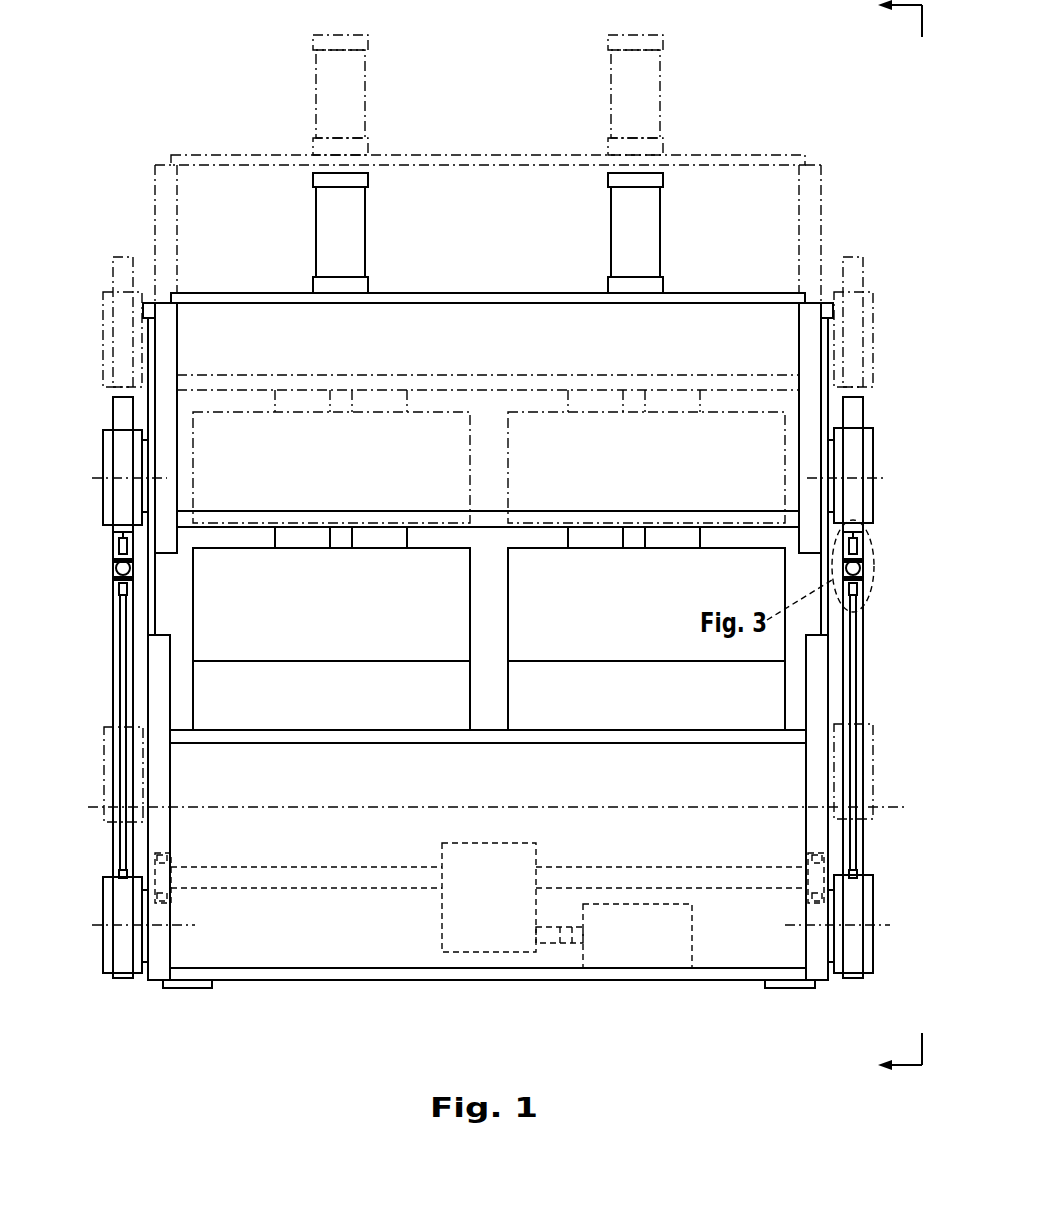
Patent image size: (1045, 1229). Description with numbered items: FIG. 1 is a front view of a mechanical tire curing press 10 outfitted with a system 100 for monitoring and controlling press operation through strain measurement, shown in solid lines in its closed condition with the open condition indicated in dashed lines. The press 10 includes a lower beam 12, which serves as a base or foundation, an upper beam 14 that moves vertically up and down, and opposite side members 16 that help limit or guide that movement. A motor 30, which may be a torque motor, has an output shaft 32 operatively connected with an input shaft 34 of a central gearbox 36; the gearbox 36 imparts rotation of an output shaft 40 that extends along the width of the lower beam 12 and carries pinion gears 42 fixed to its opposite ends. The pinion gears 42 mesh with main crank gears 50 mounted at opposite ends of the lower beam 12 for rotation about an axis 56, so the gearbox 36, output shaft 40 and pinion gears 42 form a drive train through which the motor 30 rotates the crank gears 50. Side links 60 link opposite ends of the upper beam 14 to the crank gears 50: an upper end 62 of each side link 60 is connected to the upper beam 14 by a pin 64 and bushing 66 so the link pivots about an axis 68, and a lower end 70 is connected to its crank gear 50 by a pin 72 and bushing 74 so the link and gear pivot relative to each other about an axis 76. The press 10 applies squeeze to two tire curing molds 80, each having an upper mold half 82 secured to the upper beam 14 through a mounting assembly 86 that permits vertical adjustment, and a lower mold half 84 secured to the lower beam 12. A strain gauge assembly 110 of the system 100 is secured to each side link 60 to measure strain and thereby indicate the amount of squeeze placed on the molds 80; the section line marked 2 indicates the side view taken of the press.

The press 10 is at (176, 135).
The lower beam 12 is at (718, 928).
The upper beam 14 is at (488, 296).
The side members 16 is at (153, 395).
The motor 30 is at (632, 943).
The output shaft 32 is at (572, 933).
The input shaft 34 is at (547, 935).
The central gearbox 36 is at (513, 867).
The output shaft 40 is at (610, 880).
The pinion gears 42 is at (168, 850).
The main crank gears 50 is at (165, 762).
The axis 56 is at (330, 803).
The side links 60 is at (118, 640).
The upper end 62 is at (127, 440).
The pin 64 is at (145, 458).
The bushing 66 is at (108, 453).
The axis 68 is at (97, 480).
The lower end 70 is at (125, 935).
The pin 72 is at (145, 918).
The bushing 74 is at (110, 885).
The axis 76 is at (97, 925).
The tire curing molds 80 is at (531, 542).
The upper mold half 82 is at (489, 597).
The lower mold half 84 is at (390, 707).
The mounting assembly 86 is at (308, 543).
The system for monitoring and controlling press operation 100 is at (63, 737).
The strain gauge assemblies 110 is at (106, 576).
The section line for Fig. 2 is at (892, 541).